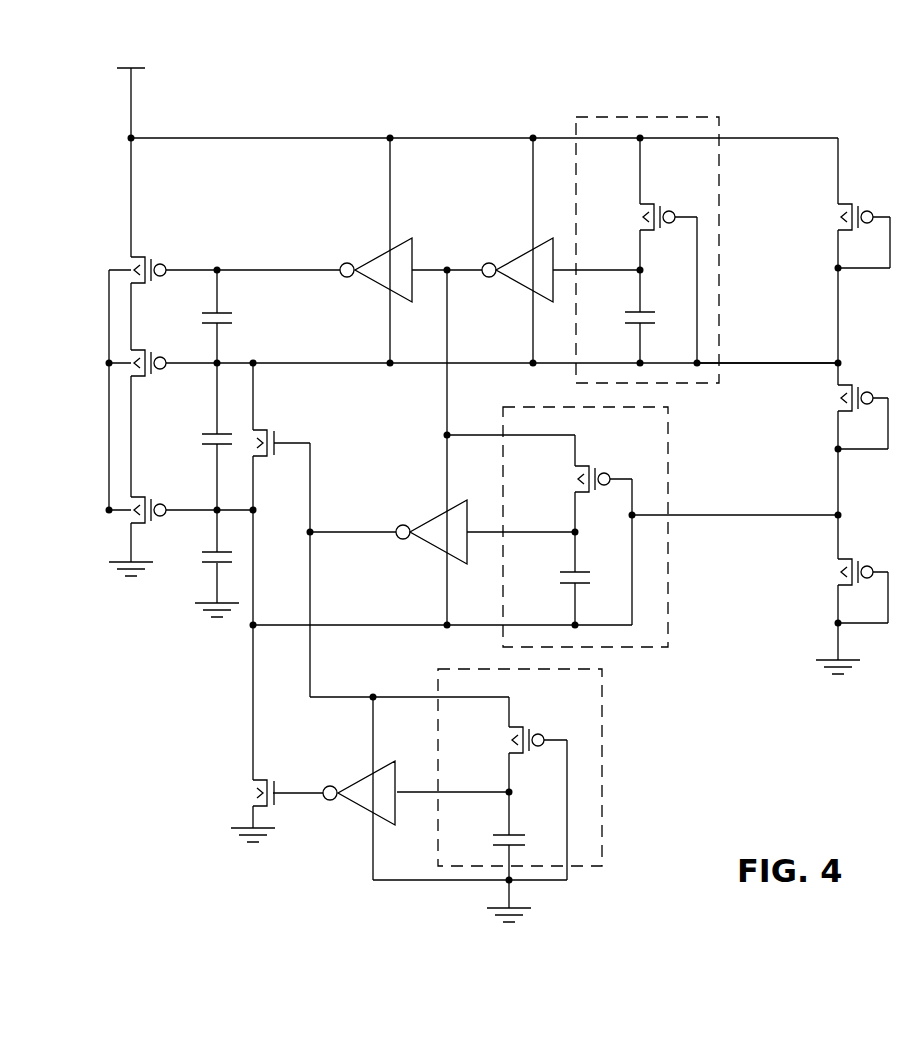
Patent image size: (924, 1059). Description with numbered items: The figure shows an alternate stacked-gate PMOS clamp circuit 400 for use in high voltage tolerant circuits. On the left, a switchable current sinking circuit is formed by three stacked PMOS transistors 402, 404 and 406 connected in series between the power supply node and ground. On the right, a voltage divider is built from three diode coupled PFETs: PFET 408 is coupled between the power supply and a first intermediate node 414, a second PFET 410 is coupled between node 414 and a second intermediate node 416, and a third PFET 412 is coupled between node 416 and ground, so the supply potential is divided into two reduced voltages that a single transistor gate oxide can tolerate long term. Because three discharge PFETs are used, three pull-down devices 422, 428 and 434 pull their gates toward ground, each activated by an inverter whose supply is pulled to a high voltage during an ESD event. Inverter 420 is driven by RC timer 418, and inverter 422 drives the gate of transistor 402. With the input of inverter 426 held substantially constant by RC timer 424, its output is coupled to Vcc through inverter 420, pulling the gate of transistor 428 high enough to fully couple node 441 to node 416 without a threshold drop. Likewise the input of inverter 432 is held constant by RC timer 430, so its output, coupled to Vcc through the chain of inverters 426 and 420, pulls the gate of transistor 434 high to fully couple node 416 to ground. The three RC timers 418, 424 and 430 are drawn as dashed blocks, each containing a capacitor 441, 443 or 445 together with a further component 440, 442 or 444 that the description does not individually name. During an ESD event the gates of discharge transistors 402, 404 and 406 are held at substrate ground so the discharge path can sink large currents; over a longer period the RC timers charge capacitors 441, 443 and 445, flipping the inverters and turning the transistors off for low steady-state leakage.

The PMOS clamp circuit 400 is at (172, 673).
The PMOS transistor 402 is at (137, 254).
The PMOS transistor 404 is at (137, 347).
The PMOS transistor 406 is at (137, 494).
The diode coupled PFET 408 is at (843, 203).
The second diode coupled PFET 410 is at (843, 384).
The third diode coupled PFET 412 is at (843, 558).
The first intermediate node 414 is at (787, 360).
The second intermediate node 416 is at (787, 513).
The RC timer 418 is at (645, 116).
The inverter 420 is at (525, 250).
The inverter 422 is at (383, 250).
The RC timer 424 is at (668, 452).
The inverter 426 is at (443, 512).
The transistor 428 is at (262, 428).
The RC timer 430 is at (603, 733).
The inverter 432 is at (367, 772).
The transistor 434 is at (255, 787).
The PMOS transistor 440 is at (644, 203).
The capacitor 441 is at (630, 311).
The PMOS transistor 442 is at (582, 465).
The capacitor 443 is at (565, 573).
The PMOS transistor 444 is at (517, 726).
The capacitor 445 is at (498, 835).